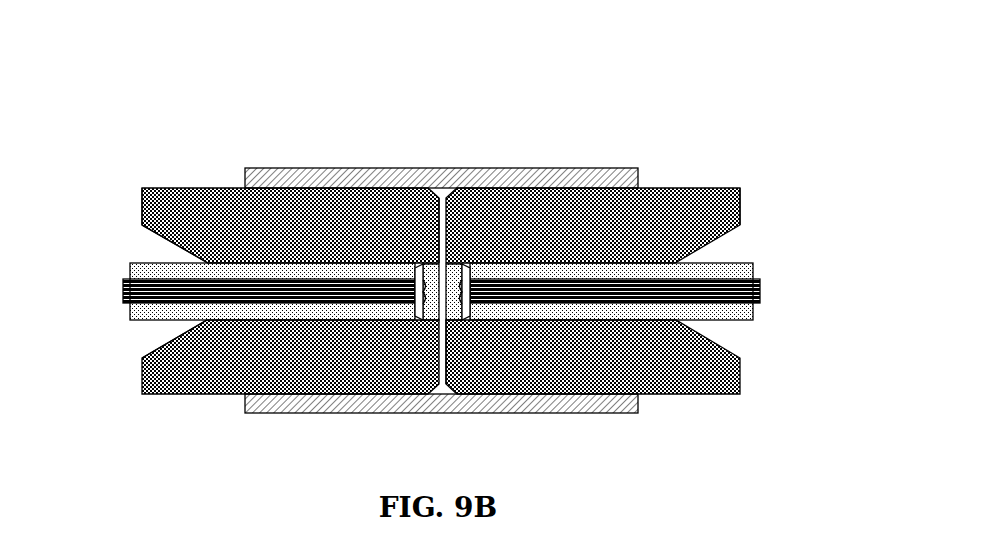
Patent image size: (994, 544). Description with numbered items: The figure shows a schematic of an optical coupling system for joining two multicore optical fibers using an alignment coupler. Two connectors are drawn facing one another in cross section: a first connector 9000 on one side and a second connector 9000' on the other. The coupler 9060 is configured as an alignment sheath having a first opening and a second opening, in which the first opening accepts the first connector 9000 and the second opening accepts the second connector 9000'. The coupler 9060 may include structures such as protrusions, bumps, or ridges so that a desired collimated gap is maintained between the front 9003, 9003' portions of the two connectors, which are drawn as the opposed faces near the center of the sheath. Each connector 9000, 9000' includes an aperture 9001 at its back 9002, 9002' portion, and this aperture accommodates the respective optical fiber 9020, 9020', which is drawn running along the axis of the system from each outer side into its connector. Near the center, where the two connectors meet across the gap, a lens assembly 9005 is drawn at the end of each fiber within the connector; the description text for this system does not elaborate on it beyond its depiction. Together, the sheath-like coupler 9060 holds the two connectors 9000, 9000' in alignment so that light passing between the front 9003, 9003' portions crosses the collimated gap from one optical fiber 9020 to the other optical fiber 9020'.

The first connector 9000 is at (284, 327).
The second connector 9000' is at (599, 327).
The aperture 9001 is at (160, 232).
The back portion 9002 is at (115, 184).
The back portion 9002' is at (762, 185).
The front portion 9003 is at (373, 145).
The front portion 9003' is at (528, 413).
The lens assembly 9005 is at (432, 270).
The optical fiber 9020 is at (246, 325).
The optical fiber 9020' is at (639, 325).
The alignment coupler 9060 is at (441, 265).